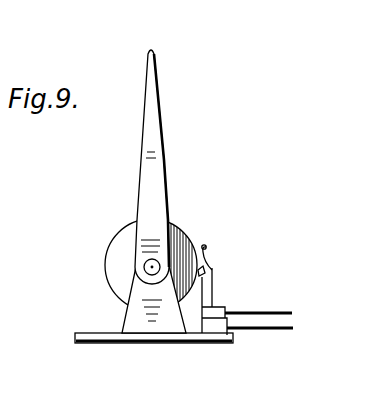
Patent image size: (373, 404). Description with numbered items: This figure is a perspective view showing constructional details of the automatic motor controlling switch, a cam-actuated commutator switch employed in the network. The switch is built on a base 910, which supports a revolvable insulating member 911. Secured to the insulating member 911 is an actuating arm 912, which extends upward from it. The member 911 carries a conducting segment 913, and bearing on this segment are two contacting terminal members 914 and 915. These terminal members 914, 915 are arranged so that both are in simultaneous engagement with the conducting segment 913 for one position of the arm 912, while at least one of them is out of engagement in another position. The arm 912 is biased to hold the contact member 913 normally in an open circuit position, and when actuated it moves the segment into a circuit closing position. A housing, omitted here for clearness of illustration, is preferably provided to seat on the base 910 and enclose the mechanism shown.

The base 910 is at (105, 345).
The revolvable insulating member 911 is at (106, 261).
The actuating arm 912 is at (165, 147).
The conducting segment 913 is at (202, 245).
The contacting terminal member 914 is at (213, 291).
The contacting terminal member 915 is at (213, 308).